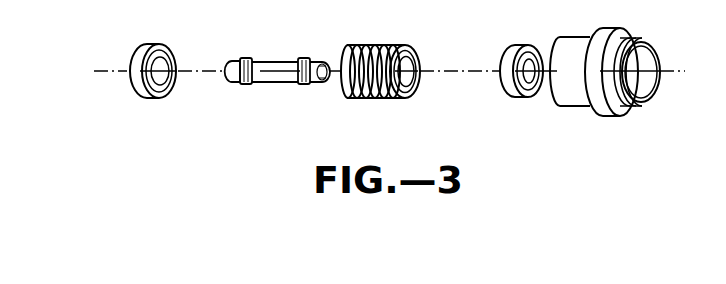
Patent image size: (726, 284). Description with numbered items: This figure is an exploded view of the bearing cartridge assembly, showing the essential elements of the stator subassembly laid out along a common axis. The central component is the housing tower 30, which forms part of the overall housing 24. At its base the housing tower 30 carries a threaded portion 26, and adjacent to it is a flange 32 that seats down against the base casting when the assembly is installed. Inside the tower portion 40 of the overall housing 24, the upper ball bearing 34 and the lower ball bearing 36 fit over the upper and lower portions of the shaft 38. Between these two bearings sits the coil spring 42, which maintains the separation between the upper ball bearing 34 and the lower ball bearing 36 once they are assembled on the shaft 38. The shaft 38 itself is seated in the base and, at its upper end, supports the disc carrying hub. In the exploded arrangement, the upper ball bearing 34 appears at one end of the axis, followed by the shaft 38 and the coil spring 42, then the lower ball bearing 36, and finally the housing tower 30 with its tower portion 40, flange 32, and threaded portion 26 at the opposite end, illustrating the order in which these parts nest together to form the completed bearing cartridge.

The overall housing 24 is at (630, 115).
The threaded portion 26 is at (636, 41).
The housing tower 30 is at (575, 107).
The flange 32 is at (617, 36).
The upper ball bearing 34 is at (148, 44).
The lower ball bearing 36 is at (508, 48).
The shaft 38 is at (287, 62).
The tower portion 40 is at (586, 38).
The coil spring 42 is at (396, 45).